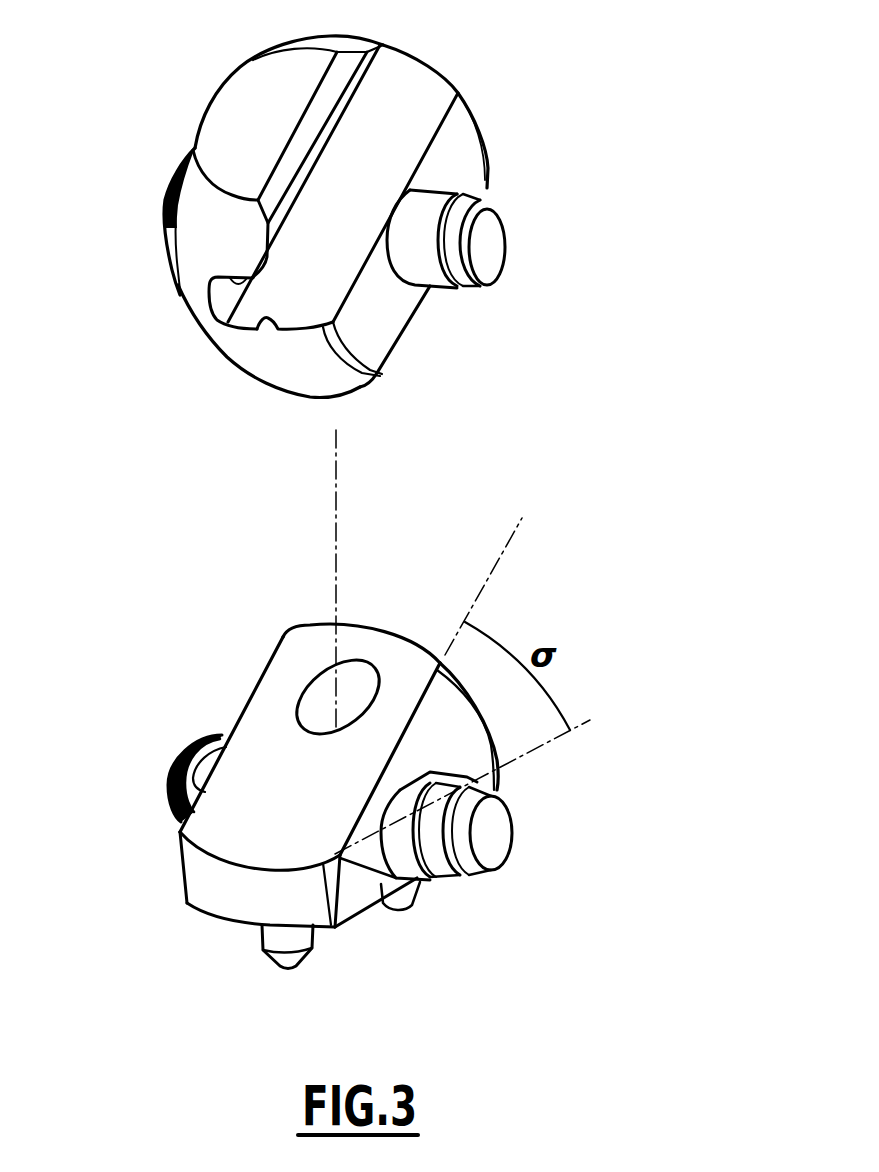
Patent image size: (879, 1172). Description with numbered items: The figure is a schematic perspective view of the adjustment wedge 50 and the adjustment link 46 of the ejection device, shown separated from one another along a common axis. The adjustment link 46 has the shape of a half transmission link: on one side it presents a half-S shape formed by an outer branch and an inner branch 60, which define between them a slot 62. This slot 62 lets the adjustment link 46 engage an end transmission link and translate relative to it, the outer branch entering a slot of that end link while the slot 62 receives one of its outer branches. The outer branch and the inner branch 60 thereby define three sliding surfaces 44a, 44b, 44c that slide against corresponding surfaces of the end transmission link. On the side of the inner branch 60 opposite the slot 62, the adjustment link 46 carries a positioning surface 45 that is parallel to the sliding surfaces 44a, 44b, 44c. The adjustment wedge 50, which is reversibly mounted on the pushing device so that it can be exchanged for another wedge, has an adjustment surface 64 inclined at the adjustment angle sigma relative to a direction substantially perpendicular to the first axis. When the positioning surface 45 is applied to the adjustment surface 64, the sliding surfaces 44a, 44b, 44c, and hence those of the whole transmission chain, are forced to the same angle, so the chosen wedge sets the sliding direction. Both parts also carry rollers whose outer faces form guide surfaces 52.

The sliding surface 44a is at (260, 332).
The sliding surface 44b is at (227, 273).
The sliding surface 44c is at (217, 163).
The positioning surface 45 is at (405, 335).
The adjustment link 46 is at (170, 256).
The adjustment wedge 50 is at (427, 647).
The guide surface 52 is at (470, 187).
The inner branch 60 is at (272, 362).
The slot 62 is at (232, 297).
The adjustment surface 64 is at (258, 720).